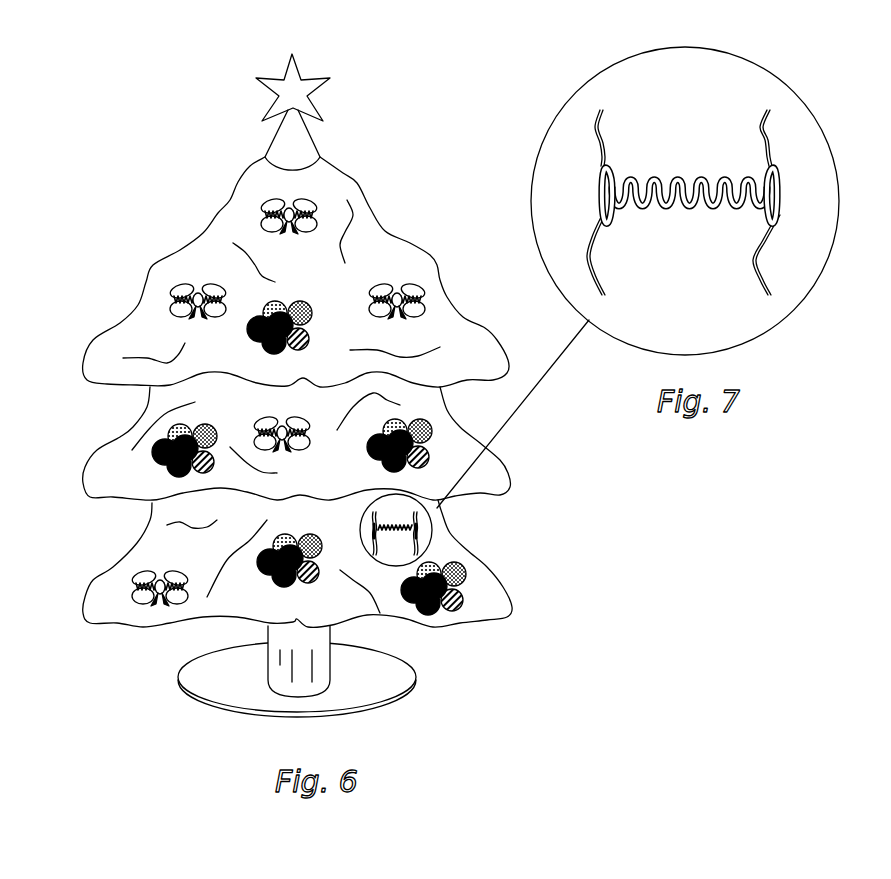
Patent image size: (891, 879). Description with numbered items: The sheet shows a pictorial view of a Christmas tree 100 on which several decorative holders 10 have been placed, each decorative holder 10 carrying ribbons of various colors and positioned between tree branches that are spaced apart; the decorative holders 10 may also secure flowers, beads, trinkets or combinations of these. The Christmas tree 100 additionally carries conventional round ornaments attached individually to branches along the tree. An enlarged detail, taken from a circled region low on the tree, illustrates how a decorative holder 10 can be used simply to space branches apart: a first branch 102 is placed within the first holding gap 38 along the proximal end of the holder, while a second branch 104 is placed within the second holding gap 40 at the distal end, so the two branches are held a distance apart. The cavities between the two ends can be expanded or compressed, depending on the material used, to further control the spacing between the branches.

In FIG. 6, the Christmas tree 100 is at (230, 220).
In FIG. 6, the decorative holder 10 is at (305, 200).
In FIG. 7, the first branch 102 is at (598, 130).
In FIG. 7, the branch 104 is at (768, 120).
In FIG. 7, the first holding gap 38 is at (603, 203).
In FIG. 7, the second holding gap 40 is at (780, 168).